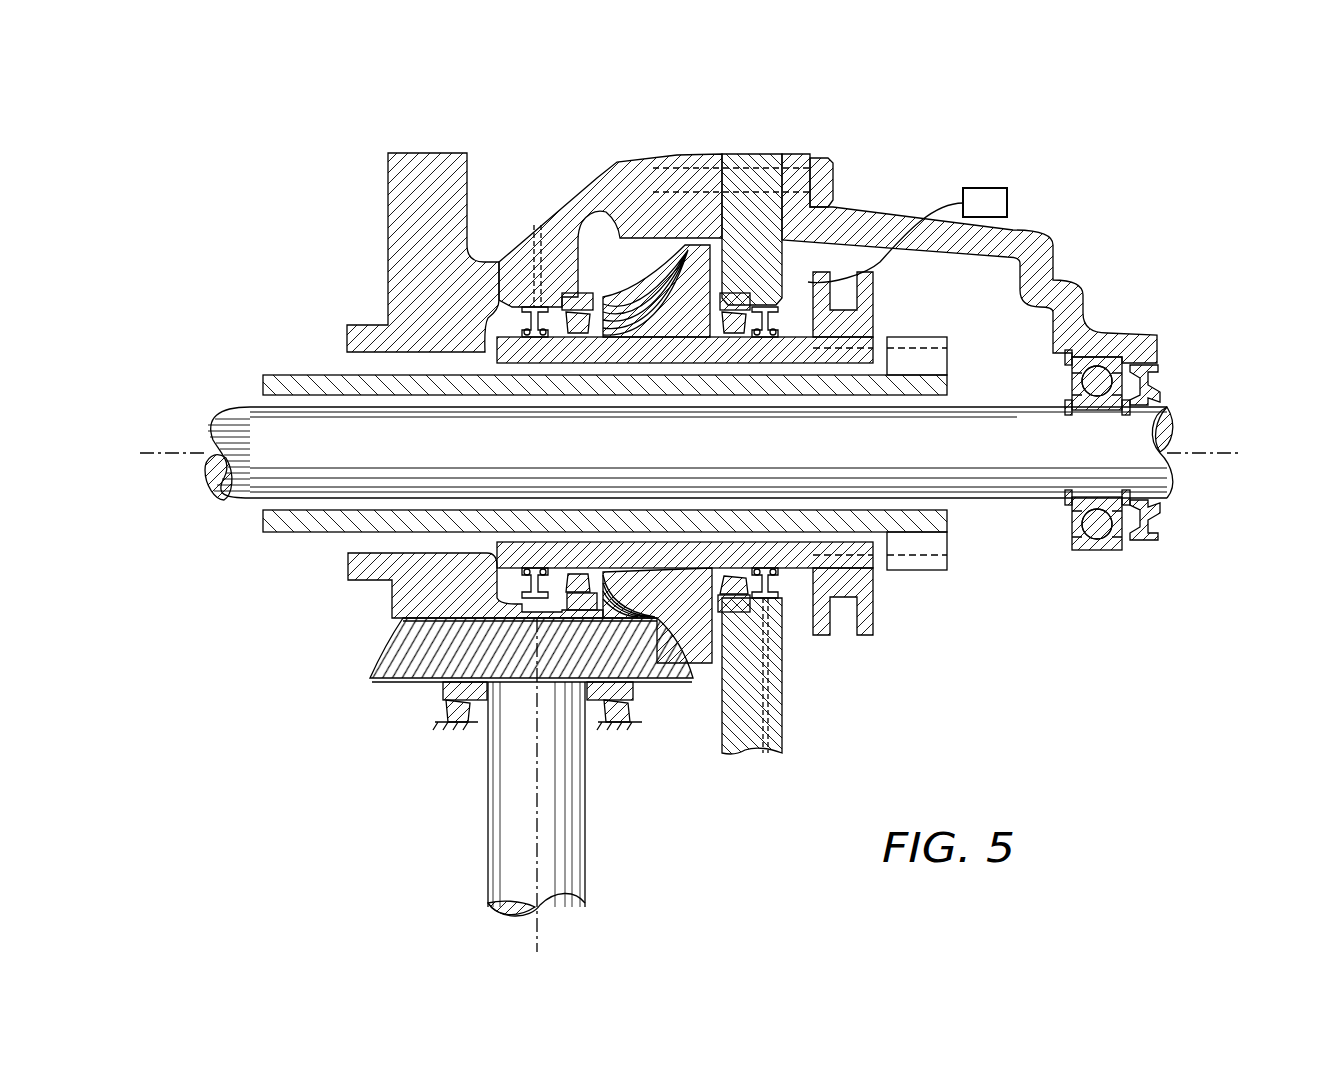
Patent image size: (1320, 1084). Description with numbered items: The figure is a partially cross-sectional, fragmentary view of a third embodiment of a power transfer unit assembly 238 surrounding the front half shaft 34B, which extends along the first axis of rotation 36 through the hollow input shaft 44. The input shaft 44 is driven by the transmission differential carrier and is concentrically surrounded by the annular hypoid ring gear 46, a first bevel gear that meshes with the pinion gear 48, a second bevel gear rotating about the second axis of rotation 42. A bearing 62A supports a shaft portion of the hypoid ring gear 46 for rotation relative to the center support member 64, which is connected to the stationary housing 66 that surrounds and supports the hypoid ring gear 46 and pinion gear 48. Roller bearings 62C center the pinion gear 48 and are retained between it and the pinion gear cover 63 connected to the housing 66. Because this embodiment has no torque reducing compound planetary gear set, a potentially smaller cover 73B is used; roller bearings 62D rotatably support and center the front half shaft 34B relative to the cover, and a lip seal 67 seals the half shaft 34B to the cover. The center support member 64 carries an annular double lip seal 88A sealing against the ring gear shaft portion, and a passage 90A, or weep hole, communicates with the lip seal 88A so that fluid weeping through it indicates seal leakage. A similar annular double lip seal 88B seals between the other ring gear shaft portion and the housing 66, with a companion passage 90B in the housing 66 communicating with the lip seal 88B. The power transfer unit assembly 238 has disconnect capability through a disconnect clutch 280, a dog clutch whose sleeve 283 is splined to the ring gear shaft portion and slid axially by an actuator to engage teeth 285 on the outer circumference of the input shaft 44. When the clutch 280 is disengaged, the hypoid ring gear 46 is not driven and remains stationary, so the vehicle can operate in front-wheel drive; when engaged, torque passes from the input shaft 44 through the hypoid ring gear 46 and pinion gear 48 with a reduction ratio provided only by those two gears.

The half shaft 34B is at (258, 405).
The first axis of rotation 36 is at (1205, 453).
The second axis of rotation 42 is at (537, 942).
The input shaft 44 is at (325, 375).
The hypoid ring gear 46 is at (690, 246).
The pinion gear 48 is at (655, 678).
The bearing 62A is at (760, 305).
The roller bearings 62C is at (442, 700).
The roller bearings 62D is at (1097, 550).
The pinion gear cover 63 is at (455, 730).
The center support member 64 is at (756, 153).
The stationary housing 66 is at (597, 178).
The lip seal 67 is at (1145, 372).
The cover 73B is at (874, 292).
The annular double lip seal 88A is at (783, 317).
The annular double lip seal 88B is at (512, 312).
The passage 90A is at (768, 712).
The passage 90B is at (548, 300).
The power transfer unit assembly 238 is at (1025, 176).
The disconnect clutch 280 is at (892, 305).
The sleeve 283 is at (865, 268).
The teeth 285 is at (947, 348).